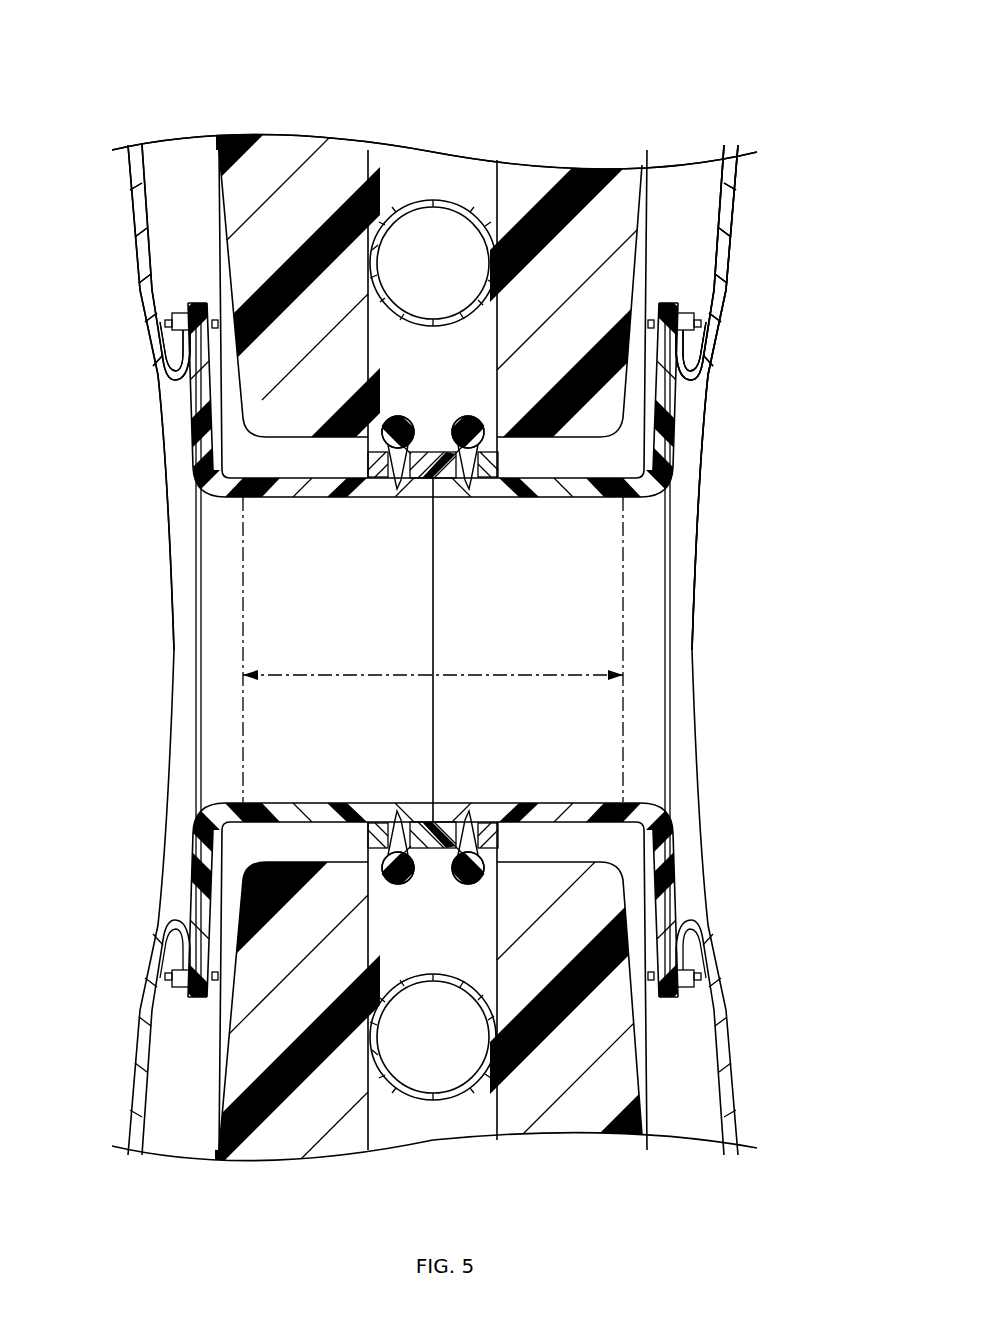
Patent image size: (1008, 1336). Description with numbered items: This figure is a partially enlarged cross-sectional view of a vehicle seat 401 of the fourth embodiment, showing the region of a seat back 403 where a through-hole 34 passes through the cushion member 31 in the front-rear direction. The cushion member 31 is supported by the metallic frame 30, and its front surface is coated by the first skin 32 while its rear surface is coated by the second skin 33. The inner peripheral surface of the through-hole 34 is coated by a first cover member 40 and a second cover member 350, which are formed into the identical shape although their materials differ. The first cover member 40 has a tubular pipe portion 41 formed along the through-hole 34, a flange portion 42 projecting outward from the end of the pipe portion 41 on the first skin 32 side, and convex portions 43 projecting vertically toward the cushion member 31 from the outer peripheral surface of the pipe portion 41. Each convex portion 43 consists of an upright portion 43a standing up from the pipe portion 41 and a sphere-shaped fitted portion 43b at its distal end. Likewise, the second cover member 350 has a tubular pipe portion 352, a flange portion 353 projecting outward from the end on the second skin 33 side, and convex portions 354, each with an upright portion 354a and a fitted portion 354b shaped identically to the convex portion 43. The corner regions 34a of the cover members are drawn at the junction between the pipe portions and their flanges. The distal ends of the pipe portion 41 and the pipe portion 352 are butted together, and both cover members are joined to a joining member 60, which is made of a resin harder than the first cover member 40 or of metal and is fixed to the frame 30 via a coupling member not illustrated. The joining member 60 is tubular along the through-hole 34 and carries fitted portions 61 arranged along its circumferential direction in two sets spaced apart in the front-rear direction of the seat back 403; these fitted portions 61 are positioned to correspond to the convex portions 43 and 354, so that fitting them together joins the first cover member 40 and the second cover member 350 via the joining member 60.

The frame 30 is at (430, 203).
The cushion member 31 is at (287, 150).
The first skin 32 is at (135, 250).
The second skin 33 is at (733, 200).
The through-hole 34 is at (540, 675).
The groove corner 34a is at (258, 498).
The first cover member 40 is at (148, 624).
The pipe portion 41 is at (333, 497).
The flange portion 42 is at (205, 405).
The convex portion 43 is at (393, 396).
The upright portion 43a is at (368, 462).
The fitted portion 43b is at (406, 424).
The joining member 60 is at (407, 650).
The fitted portion 61 is at (433, 500).
The second cover member 350 is at (738, 634).
The pipe portion 352 is at (540, 497).
The flange portion 353 is at (662, 405).
The convex portion 354 is at (468, 396).
The upright portion 354a is at (498, 462).
The fitted portion 354b is at (458, 416).
The vehicle seat 401 is at (803, 90).
The seat back 403 is at (804, 278).